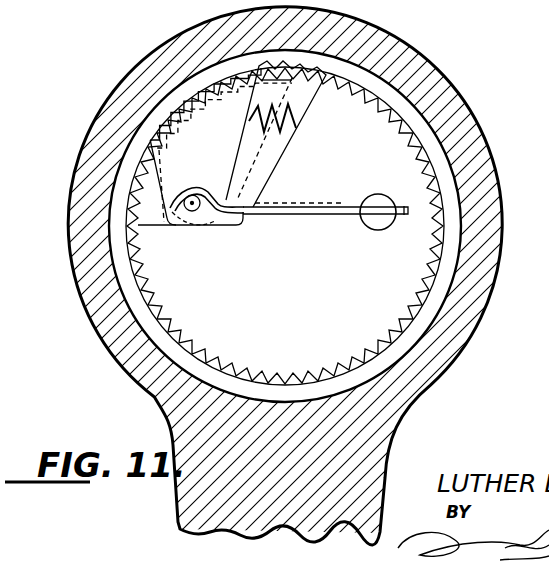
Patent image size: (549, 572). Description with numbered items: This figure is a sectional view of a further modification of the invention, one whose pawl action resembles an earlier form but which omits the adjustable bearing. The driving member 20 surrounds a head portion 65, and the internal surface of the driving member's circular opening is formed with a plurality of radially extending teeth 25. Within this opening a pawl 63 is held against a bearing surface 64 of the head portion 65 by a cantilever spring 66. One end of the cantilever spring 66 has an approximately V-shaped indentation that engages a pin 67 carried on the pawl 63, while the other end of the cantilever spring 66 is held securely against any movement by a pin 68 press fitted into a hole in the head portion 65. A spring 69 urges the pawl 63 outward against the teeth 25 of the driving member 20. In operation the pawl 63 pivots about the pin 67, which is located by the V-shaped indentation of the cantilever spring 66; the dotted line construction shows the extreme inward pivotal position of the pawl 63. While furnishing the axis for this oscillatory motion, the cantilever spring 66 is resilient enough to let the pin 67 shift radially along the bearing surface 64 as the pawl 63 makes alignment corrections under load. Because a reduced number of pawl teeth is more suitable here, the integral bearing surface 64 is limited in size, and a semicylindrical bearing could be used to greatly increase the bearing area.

The driving member 20 is at (470, 130).
The teeth 25 is at (440, 219).
The pawl 63 is at (211, 173).
The bearing surface 64 is at (184, 222).
The head portion 65 is at (288, 298).
The cantilever spring 66 is at (314, 207).
The pin 67 is at (199, 213).
The pin 68 is at (381, 200).
The spring 69 is at (249, 121).